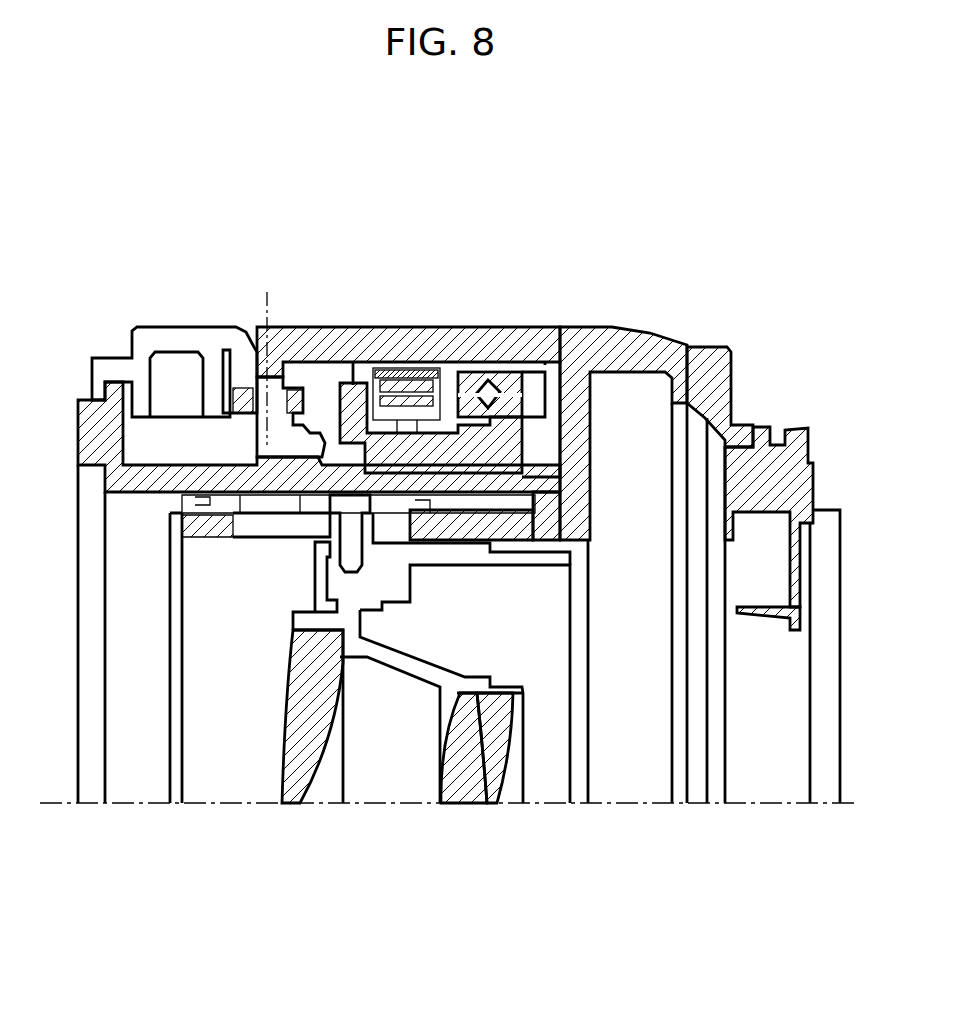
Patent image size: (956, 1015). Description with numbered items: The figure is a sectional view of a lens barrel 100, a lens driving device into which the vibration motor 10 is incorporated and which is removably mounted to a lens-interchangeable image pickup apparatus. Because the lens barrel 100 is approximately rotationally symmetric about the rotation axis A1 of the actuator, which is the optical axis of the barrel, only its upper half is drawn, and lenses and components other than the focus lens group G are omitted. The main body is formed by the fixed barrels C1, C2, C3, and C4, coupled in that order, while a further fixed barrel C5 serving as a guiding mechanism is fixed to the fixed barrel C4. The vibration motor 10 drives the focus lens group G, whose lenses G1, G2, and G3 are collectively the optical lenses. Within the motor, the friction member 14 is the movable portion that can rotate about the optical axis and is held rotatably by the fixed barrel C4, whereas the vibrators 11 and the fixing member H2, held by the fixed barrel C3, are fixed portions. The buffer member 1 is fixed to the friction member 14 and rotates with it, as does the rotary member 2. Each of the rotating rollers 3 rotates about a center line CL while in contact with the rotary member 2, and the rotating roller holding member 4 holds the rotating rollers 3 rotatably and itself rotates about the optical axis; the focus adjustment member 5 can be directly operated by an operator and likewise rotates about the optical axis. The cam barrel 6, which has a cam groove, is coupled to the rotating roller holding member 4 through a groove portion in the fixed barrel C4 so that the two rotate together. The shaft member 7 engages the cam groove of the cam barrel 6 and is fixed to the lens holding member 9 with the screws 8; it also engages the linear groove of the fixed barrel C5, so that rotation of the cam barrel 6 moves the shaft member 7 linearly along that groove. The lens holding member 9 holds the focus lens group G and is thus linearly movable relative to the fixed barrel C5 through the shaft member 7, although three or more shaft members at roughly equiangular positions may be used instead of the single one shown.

The lens barrel 100 is at (146, 923).
The buffer member 1 is at (345, 383).
The rotary member 2 is at (320, 400).
The rotating rollers 3 is at (300, 355).
The rotating roller holding member 4 is at (260, 386).
The focus adjustment member 5 is at (150, 338).
The cam barrel 6 is at (255, 505).
The shaft member 7 is at (330, 523).
The screws 8 is at (330, 567).
The lens holding member 9 is at (293, 613).
The vibration motor 10 is at (543, 262).
The vibrators 11 is at (445, 410).
The friction member 14 is at (470, 385).
The fixing member H2 is at (532, 387).
The fixed barrel C1 is at (800, 475).
The fixed barrel C2 is at (707, 345).
The fixed barrel C3 is at (660, 335).
The fixed barrel C4 is at (81, 400).
The fixed barrel C5 is at (180, 522).
The center line CL is at (266, 357).
The rotation axis A1 is at (447, 822).
The focus lens group G is at (399, 786).
The lens G1 is at (297, 805).
The lens G2 is at (445, 805).
The lens G3 is at (499, 792).